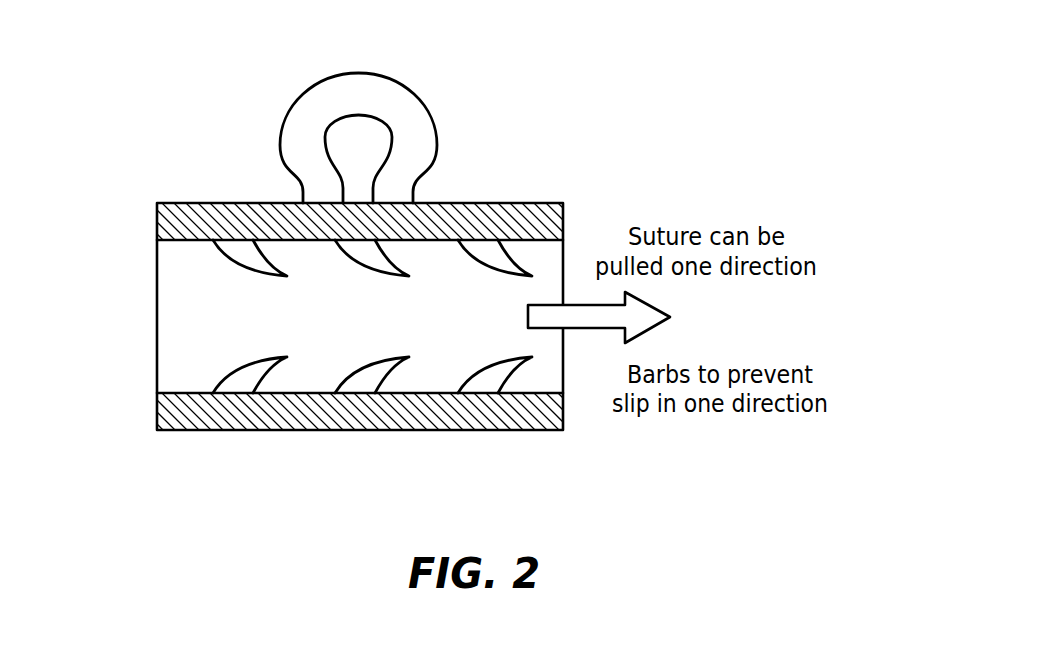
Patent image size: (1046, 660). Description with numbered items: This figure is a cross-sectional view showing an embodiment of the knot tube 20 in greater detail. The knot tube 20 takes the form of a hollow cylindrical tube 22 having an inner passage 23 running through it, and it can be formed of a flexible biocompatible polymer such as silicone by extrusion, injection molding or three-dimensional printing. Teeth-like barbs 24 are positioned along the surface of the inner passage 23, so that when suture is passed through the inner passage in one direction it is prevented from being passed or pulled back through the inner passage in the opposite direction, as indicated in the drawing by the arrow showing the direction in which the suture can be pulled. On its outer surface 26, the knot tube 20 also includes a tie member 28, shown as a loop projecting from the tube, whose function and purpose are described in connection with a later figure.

The knot tube 20 is at (362, 285).
The hollow cylindrical tube 22 is at (278, 413).
The inner passage 23 is at (207, 291).
The teeth-like barbs 24 is at (251, 366).
The outer surface 26 is at (197, 203).
The tie member 28 is at (433, 113).